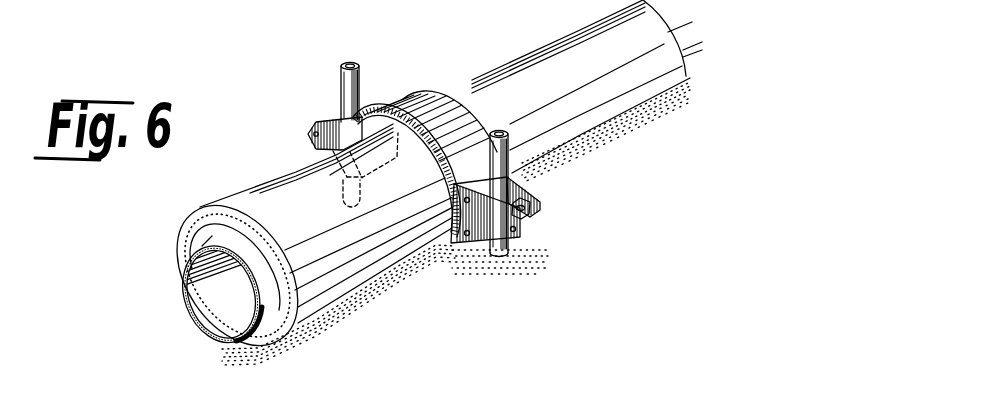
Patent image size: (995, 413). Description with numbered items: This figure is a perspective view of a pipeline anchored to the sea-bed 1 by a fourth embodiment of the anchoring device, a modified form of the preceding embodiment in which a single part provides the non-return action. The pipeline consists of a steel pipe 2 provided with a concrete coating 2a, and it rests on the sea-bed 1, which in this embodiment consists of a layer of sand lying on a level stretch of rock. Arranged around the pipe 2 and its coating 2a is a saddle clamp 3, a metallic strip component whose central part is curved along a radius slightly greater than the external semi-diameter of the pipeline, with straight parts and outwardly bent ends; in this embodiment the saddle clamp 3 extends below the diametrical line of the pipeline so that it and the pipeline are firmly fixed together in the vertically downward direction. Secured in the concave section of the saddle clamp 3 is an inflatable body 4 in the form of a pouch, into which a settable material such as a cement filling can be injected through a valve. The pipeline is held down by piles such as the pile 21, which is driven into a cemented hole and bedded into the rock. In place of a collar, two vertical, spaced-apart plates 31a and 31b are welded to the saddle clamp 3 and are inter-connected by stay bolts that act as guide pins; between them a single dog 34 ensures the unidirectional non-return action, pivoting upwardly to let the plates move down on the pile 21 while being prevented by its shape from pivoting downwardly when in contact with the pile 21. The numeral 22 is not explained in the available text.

The sea-bed 1 is at (613, 137).
The pipe 2 is at (185, 300).
The concrete coating 2a is at (533, 77).
The saddle clamp 3 is at (438, 114).
The inflatable body 4 is at (390, 108).
The pile 21 is at (502, 153).
The bolt 22 is at (341, 84).
The vertical plate 31a is at (467, 244).
The vertical plate 31b is at (527, 187).
The dog 34 is at (524, 214).